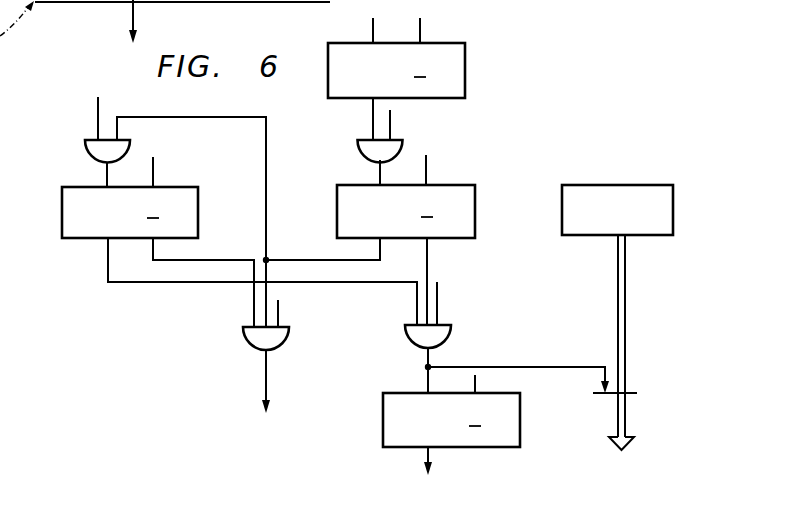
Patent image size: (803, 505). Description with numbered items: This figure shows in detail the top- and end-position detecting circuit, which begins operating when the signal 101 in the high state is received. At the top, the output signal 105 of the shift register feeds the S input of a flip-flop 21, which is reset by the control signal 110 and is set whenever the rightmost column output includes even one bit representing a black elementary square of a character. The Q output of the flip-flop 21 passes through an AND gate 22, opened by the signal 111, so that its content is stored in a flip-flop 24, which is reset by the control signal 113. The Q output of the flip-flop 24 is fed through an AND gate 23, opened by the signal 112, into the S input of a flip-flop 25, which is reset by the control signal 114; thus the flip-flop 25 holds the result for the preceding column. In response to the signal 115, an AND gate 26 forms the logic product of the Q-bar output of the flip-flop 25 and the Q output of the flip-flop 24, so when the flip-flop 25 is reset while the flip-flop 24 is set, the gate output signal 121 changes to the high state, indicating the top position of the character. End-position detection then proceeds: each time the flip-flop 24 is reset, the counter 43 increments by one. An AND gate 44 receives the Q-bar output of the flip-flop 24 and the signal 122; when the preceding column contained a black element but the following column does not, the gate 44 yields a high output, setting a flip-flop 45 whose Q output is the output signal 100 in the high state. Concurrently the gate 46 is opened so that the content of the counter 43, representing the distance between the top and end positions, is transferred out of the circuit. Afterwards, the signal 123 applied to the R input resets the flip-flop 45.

The signal 101 is at (131, 20).
The output signal of the shift register 105 is at (371, 25).
The control signal 110 is at (422, 27).
The flip-flop 21 is at (466, 68).
The AND gate 22 is at (360, 146).
The signal 111 is at (391, 123).
The signal 112 is at (97, 119).
The AND gate 23 is at (128, 152).
The control signal 114 is at (154, 167).
The control signal 113 is at (428, 166).
The flip-flop 25 is at (199, 205).
The flip-flop 24 is at (476, 212).
The counter 43 is at (674, 201).
The signal 115 is at (280, 310).
The AND gate 26 is at (248, 340).
The signal 121 is at (268, 383).
The AND gate 44 is at (410, 340).
The signal 122 is at (439, 300).
The gate 46 is at (637, 392).
The signal 123 is at (477, 381).
The flip-flop 45 is at (521, 428).
The output signal 100 is at (431, 460).